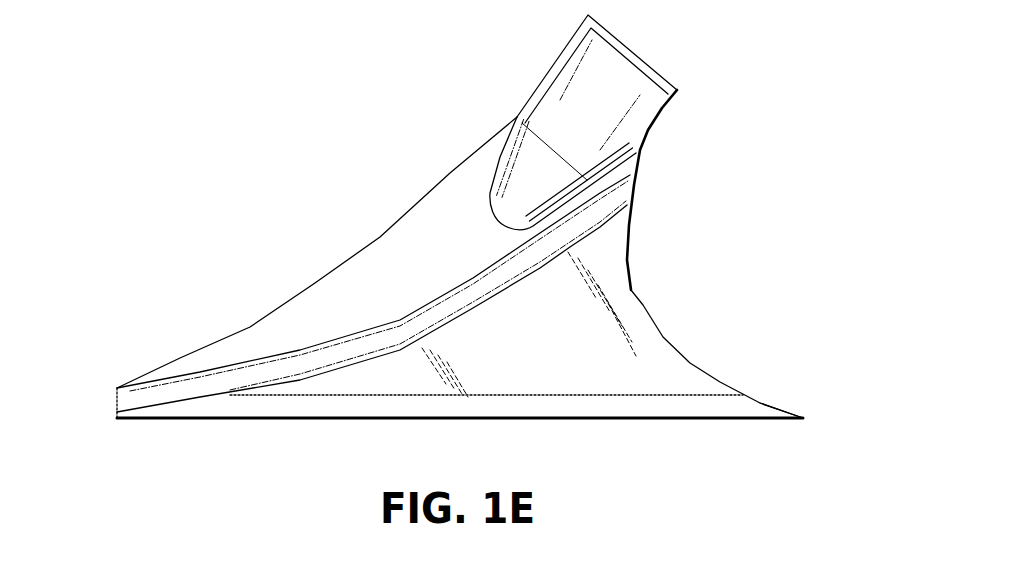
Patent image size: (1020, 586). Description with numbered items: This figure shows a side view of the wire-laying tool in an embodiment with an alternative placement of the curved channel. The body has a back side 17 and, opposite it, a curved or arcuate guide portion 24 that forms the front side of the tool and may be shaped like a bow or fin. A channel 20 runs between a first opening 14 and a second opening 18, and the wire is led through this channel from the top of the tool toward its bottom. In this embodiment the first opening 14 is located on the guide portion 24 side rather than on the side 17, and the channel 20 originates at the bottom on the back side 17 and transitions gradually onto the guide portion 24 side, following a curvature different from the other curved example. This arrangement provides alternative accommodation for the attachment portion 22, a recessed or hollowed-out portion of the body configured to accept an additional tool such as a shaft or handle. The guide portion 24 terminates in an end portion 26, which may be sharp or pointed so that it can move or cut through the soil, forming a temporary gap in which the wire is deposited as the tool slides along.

The first opening 14 is at (643, 155).
The side 17 is at (380, 258).
The second opening 18 is at (117, 388).
The channel 20 is at (445, 308).
The attachment portion 22 is at (582, 102).
The guide portion 24 is at (642, 302).
The end portion 26 is at (805, 417).